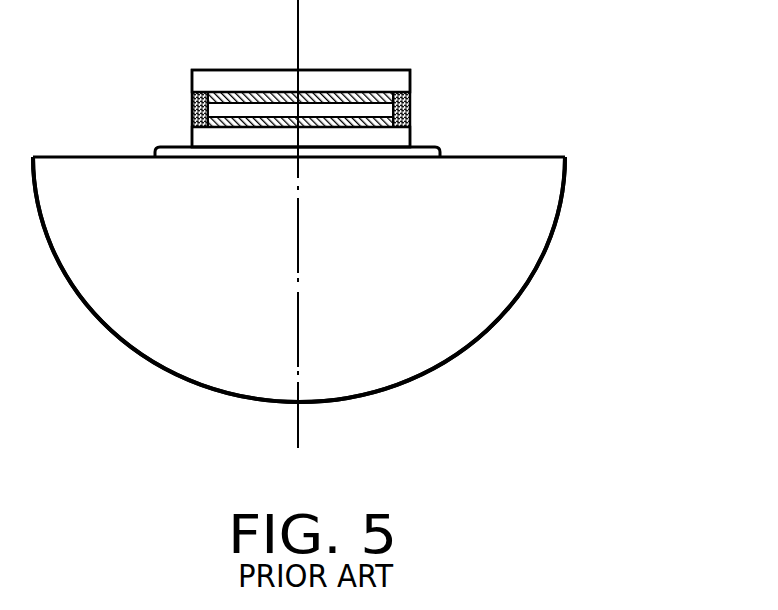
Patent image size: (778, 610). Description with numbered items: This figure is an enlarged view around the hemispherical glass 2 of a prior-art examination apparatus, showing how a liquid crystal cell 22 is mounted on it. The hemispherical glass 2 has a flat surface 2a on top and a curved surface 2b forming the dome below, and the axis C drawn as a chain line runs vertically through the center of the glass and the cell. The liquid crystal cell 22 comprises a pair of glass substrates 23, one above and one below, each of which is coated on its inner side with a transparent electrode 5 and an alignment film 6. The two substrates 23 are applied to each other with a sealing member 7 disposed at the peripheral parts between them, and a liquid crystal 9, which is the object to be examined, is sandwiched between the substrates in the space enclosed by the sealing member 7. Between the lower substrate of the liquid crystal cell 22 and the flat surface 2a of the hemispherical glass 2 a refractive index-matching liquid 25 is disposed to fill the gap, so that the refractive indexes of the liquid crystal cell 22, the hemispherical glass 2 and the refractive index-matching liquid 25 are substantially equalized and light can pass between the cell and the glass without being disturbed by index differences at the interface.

The hemispherical glass 2 is at (555, 255).
The flat surface 2a is at (530, 157).
The curved surface of lens 2b is at (476, 337).
The transparent electrode 5 is at (245, 90).
The alignment film 6 is at (330, 93).
The sealing member 7 is at (192, 101).
The liquid crystal 9 is at (322, 110).
The liquid crystal cell 22 is at (498, 72).
The glass substrate 23 is at (383, 75).
The refractive index-matching liquid 25 is at (157, 155).
The center axis C is at (298, 432).